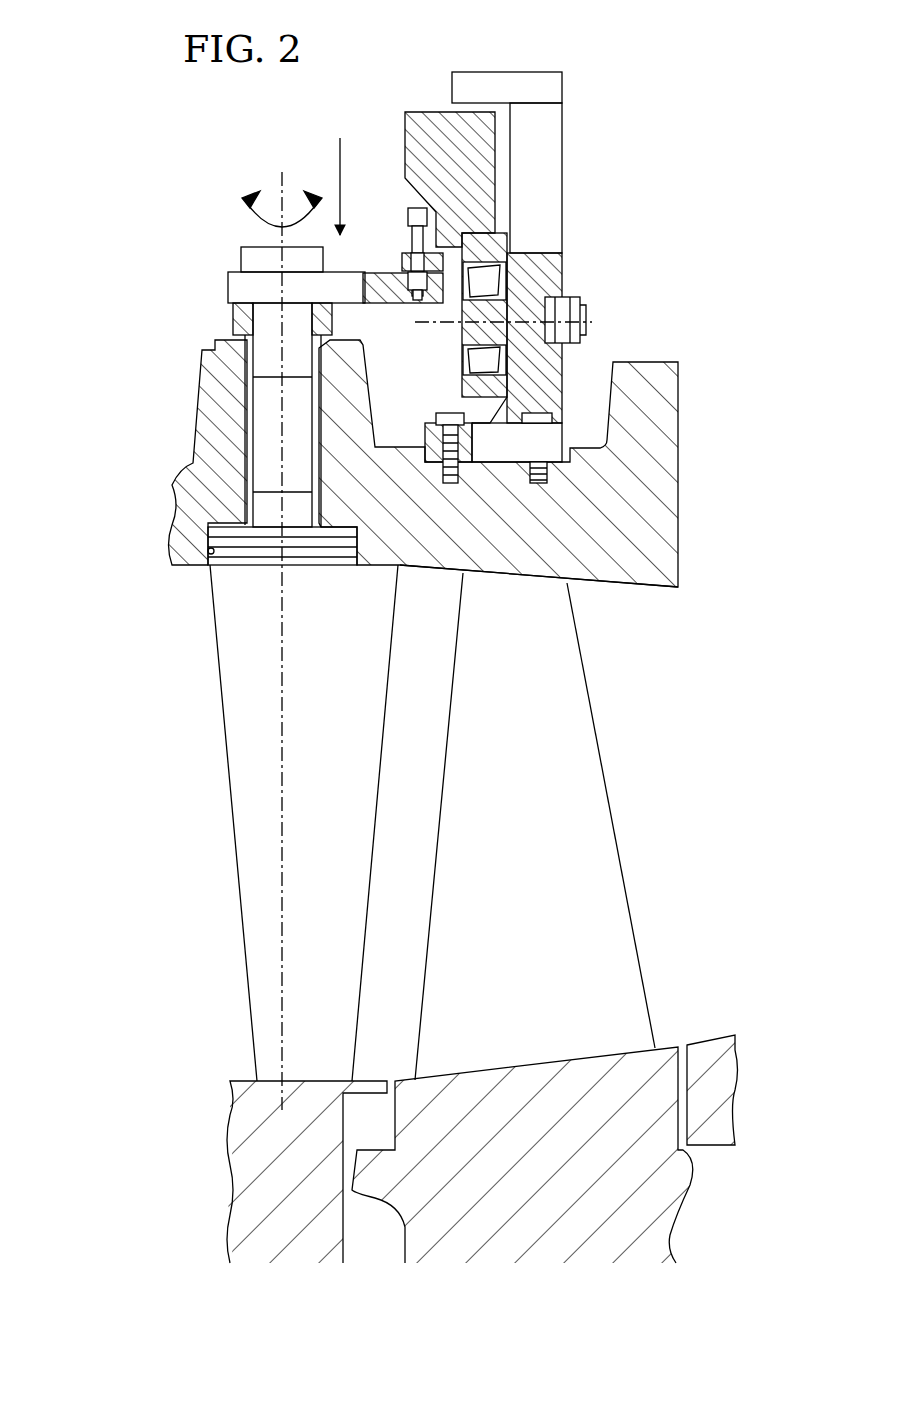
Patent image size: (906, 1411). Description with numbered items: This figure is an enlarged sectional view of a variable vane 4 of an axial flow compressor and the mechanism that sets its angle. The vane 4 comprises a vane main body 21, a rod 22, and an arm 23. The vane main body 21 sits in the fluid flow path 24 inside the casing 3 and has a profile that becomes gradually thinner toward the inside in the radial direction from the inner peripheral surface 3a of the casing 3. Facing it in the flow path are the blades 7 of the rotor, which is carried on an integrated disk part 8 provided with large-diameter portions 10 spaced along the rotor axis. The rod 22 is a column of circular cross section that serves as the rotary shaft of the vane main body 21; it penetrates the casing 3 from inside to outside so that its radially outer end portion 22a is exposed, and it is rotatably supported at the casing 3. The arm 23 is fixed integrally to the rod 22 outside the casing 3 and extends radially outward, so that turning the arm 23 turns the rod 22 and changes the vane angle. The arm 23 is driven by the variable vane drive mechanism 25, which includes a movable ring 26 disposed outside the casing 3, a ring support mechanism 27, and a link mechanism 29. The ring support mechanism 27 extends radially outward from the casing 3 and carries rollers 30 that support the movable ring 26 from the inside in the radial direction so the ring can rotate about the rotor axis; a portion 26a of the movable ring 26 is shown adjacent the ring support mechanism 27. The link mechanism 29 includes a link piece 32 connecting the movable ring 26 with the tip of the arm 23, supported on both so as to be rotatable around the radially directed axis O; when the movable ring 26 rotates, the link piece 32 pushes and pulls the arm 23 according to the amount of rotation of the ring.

The casing 3 is at (650, 366).
The inner peripheral surface 3a is at (646, 586).
The vane 4 is at (222, 681).
The blades 7 is at (570, 778).
The integrated disk part 8 is at (493, 1107).
The large-diameter portions 10 is at (665, 1050).
The vane main body 21 is at (245, 745).
The rod 22 is at (260, 428).
The end portion 22a is at (252, 256).
The arm 23 is at (345, 283).
The fluid flow path 24 is at (155, 862).
The variable vane drive mechanism 25 is at (690, 156).
The movable ring 26 is at (425, 118).
The flange of block 26a is at (418, 215).
The ring support mechanism 27 is at (553, 142).
The link mechanism 29 is at (392, 243).
The rollers 30 is at (468, 328).
The link piece 32 is at (445, 262).
The axis O is at (280, 937).